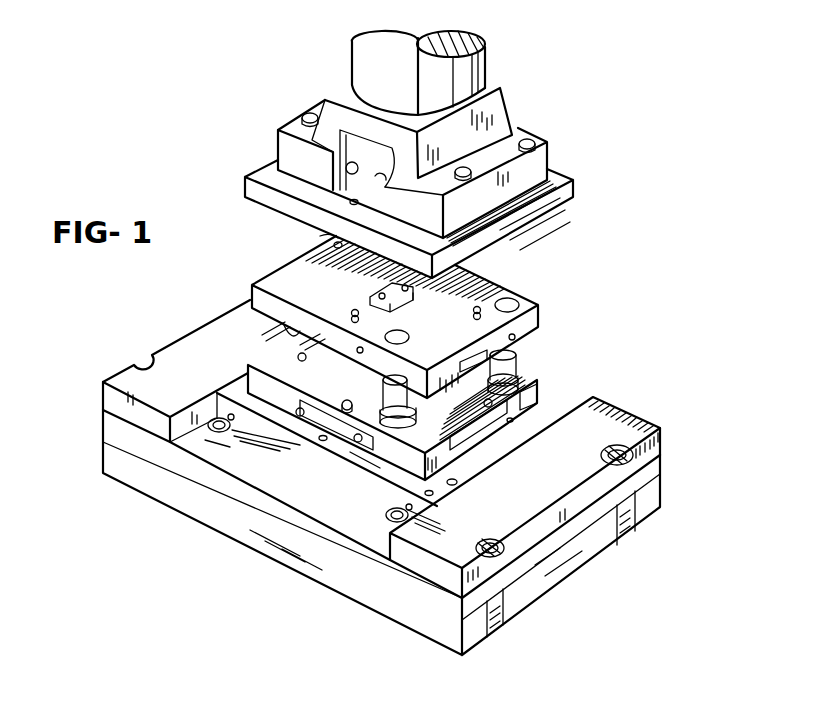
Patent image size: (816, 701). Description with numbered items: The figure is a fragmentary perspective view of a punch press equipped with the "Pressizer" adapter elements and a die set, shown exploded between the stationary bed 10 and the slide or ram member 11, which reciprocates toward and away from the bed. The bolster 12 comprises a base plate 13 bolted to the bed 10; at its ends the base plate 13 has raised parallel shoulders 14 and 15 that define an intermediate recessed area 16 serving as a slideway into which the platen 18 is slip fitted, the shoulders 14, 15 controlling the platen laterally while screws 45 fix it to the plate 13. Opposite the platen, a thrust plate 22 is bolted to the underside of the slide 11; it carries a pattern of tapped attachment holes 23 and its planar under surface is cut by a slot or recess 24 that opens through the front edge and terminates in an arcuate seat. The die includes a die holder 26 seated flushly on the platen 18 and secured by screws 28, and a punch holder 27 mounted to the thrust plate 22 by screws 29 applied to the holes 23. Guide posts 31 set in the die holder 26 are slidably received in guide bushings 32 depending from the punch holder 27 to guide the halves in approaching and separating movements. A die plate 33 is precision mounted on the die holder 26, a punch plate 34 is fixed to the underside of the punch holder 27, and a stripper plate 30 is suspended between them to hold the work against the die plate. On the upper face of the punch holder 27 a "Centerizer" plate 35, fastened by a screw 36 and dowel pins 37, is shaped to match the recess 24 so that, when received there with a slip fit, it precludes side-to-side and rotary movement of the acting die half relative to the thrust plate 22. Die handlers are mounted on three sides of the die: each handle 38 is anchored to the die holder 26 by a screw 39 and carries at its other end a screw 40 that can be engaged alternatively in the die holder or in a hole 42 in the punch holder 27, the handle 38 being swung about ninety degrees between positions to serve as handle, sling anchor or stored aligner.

The stationary bed 10 is at (366, 600).
The slide or ram member 11 is at (318, 105).
The bolster 12 is at (88, 441).
The base plate 13 is at (133, 445).
The shoulder 14 is at (172, 347).
The shoulder 15 is at (618, 415).
The recessed area 16 is at (257, 483).
The platen 18 is at (432, 495).
The thrust plate 22 is at (245, 184).
The tapped attachment holes 23 is at (348, 204).
The slot or recess 24 is at (322, 240).
The die holder 26 is at (245, 372).
The punch holder 27 is at (262, 282).
The screws 28 is at (524, 393).
The screws 29 is at (350, 310).
The stripper plate 30 is at (285, 323).
The guide posts 31 is at (520, 370).
The guide bushings 32 is at (411, 384).
The die plate 33 is at (298, 355).
The punch plate 34 is at (474, 362).
The Centerizer plate 35 is at (417, 304).
The screw 36 is at (393, 286).
The dowel pins 37 is at (376, 296).
The handle 38 is at (318, 426).
The screw 39 is at (358, 444).
The screw 40 is at (298, 416).
The hole 42 is at (360, 356).
The screws 45 is at (458, 483).